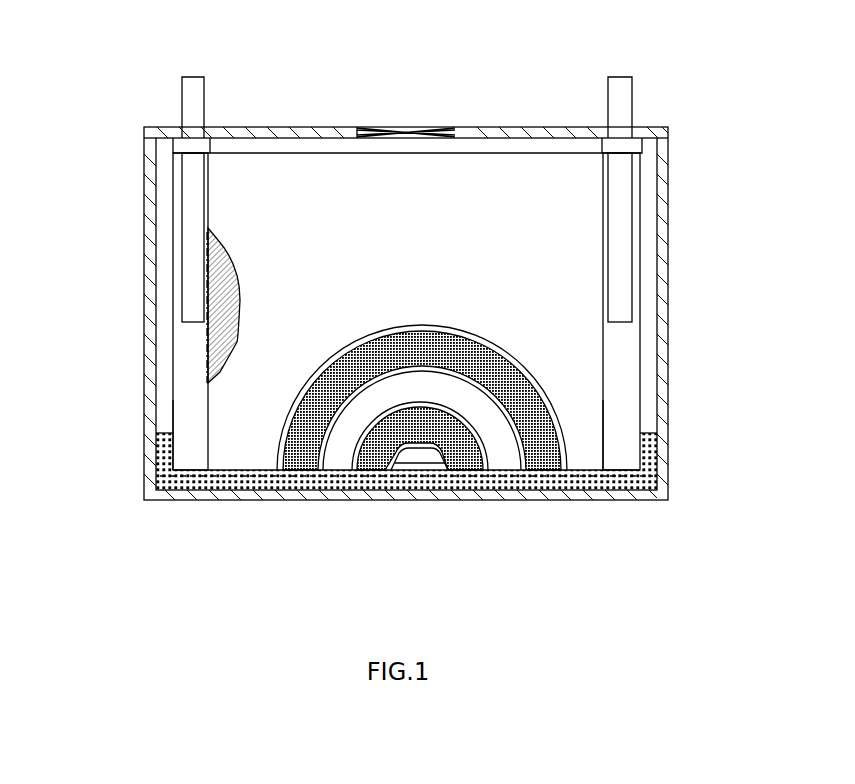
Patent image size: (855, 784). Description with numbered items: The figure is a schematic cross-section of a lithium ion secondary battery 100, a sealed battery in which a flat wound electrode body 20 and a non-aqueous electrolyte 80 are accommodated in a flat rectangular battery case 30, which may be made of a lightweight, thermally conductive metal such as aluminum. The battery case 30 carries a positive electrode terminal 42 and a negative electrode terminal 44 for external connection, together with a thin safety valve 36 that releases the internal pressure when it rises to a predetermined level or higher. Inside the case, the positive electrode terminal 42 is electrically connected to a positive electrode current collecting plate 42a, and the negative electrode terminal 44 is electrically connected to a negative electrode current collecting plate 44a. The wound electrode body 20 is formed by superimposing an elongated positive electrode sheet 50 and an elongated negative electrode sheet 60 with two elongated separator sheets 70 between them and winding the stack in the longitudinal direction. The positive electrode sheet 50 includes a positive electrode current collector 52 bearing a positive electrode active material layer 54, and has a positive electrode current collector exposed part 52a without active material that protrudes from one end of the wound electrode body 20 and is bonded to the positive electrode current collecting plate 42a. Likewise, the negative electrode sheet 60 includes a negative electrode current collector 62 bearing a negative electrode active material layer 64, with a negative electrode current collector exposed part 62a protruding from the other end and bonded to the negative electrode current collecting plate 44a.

The lithium ion secondary battery 100 is at (670, 92).
The wound electrode body 20 is at (297, 180).
The battery case 30 is at (668, 231).
The safety valve 36 is at (405, 127).
The positive electrode terminal 42 is at (192, 77).
The positive electrode current collecting plate 42a is at (193, 217).
The negative electrode terminal 44 is at (618, 85).
The negative electrode current collecting plate 44a is at (618, 183).
The positive electrode sheet 50 is at (300, 455).
The positive electrode current collector 52 is at (173, 373).
The positive electrode current collector exposed part 52a is at (187, 447).
The positive electrode active material layer 54 is at (230, 277).
The negative electrode sheet 60 is at (372, 453).
The negative electrode current collector 62 is at (640, 333).
The negative electrode current collector exposed part 62a is at (625, 377).
The negative electrode active material layer 64 is at (398, 529).
The separator sheet 70 is at (243, 405).
The non-aqueous electrolyte 80 is at (585, 483).